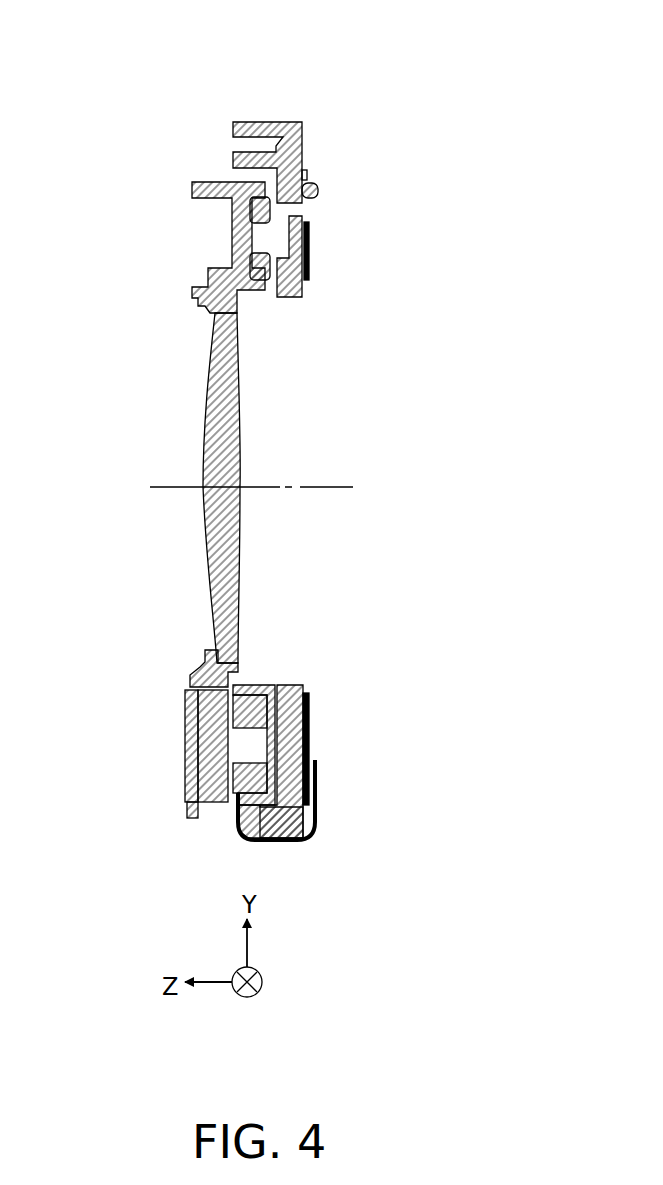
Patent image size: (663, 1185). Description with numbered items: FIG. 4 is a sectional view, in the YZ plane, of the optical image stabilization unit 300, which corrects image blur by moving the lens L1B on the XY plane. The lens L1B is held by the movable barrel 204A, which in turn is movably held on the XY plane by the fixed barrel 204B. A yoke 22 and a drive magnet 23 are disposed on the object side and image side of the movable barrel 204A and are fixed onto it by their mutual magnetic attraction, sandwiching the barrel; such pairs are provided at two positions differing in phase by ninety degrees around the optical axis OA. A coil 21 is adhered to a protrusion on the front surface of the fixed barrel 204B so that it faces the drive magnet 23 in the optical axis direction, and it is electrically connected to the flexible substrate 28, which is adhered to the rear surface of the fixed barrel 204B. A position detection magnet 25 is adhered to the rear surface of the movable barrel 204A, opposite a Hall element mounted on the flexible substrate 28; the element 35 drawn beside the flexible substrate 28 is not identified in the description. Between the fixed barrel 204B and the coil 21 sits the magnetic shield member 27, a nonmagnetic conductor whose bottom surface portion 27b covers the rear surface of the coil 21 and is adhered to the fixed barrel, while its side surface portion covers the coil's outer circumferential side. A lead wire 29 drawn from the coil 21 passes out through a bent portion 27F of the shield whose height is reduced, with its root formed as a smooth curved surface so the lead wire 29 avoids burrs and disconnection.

The optical image stabilization unit 300 is at (264, 86).
The 1B fixed barrel 204B is at (285, 157).
The 1B movable barrel 204A is at (222, 190).
The position detection magnet 25 is at (260, 213).
The magnet holder 35 is at (283, 237).
The flexible substrate 28 is at (310, 247).
The lens L1B is at (207, 488).
The optical axis OA is at (302, 487).
The yoke 22 is at (192, 717).
The drive magnet 23 is at (217, 745).
The magnetic shield member 27 is at (257, 684).
The bent portion 27F is at (245, 813).
The coil 21 is at (250, 712).
The bottom surface portion 27b is at (318, 797).
The lead wire 29 is at (320, 815).